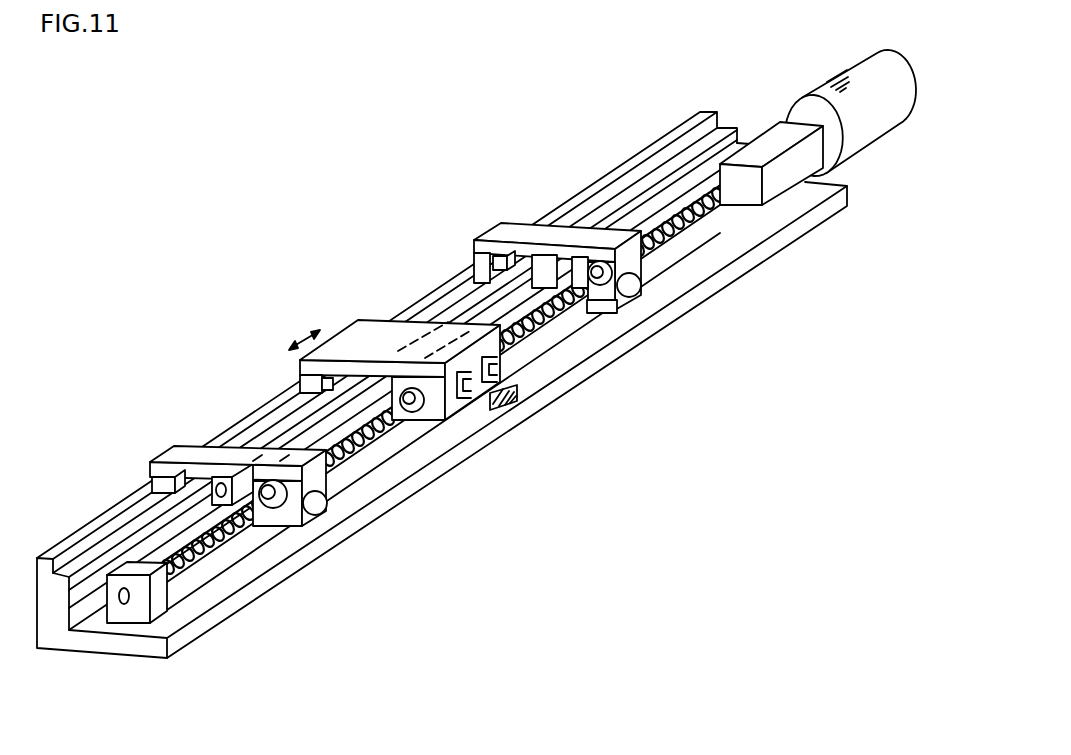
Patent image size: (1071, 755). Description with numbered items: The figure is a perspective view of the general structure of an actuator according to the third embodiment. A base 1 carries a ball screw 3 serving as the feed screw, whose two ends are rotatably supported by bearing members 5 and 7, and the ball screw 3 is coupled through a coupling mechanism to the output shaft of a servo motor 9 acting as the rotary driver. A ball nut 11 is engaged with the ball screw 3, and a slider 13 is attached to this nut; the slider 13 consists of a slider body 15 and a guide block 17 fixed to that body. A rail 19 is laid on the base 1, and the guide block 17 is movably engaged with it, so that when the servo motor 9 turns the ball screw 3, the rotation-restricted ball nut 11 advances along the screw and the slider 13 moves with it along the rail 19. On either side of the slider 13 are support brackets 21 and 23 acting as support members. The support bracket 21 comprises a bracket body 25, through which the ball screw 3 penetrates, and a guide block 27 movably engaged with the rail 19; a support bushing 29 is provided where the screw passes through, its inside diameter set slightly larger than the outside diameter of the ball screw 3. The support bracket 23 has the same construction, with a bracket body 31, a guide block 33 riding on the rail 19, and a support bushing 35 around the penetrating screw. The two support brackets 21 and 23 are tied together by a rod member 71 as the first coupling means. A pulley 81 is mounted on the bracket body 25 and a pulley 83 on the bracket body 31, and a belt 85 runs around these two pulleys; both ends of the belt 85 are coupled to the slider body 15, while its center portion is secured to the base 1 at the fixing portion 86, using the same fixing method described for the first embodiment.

The base 1 is at (152, 648).
The ball screw 3 is at (688, 203).
The bearing member 5 is at (112, 618).
The bearing member 7 is at (803, 170).
The servo motor 9 is at (870, 52).
The ball nut 11 is at (442, 413).
The slider 13 is at (375, 316).
The slider body 15 is at (340, 328).
The guide block 17 is at (290, 357).
The rail 19 is at (93, 527).
The support bracket 21 is at (199, 444).
The support bracket 23 is at (527, 222).
The bracket body 25 is at (282, 514).
The guide block 27 is at (152, 462).
The support bushing 29 is at (268, 510).
The bracket body 31 is at (612, 285).
The guide block 33 is at (478, 250).
The support bushing 35 is at (603, 292).
The rod member 71 is at (480, 310).
The pulley 81 is at (318, 515).
The pulley 83 is at (641, 290).
The belt 85 is at (407, 460).
The fixing portion 86 is at (512, 402).